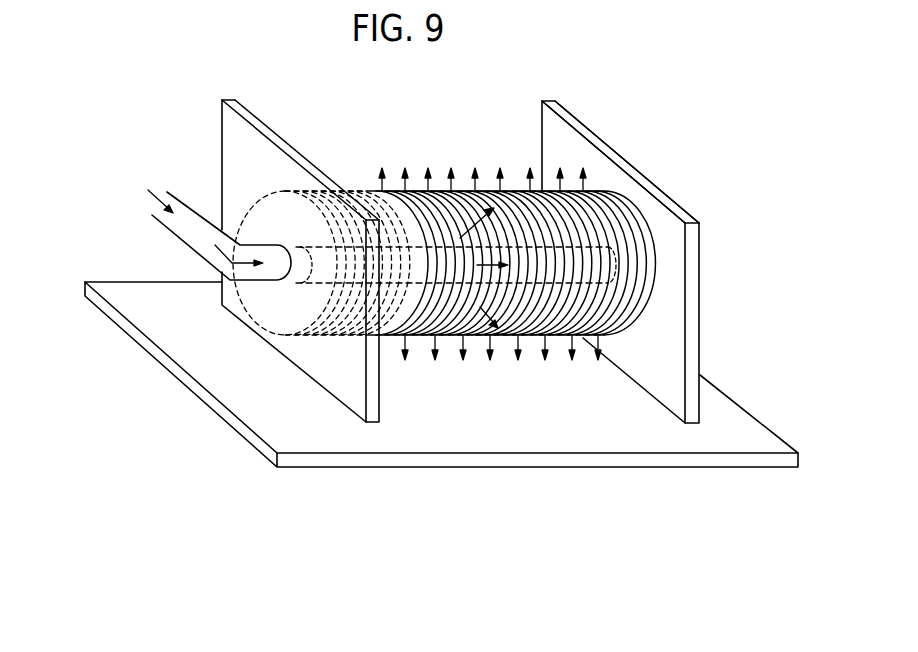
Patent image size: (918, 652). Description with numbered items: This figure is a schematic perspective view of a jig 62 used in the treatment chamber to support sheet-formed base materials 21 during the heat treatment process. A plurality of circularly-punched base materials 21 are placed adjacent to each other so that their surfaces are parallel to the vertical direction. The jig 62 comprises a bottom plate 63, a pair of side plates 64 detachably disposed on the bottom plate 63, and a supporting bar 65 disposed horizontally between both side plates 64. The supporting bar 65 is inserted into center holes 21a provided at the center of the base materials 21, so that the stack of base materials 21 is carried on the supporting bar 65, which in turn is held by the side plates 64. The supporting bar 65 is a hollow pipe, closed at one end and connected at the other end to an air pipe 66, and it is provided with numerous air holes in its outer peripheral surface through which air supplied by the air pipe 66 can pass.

The sheet-formed base materials 21 is at (418, 191).
The center holes 21a is at (312, 192).
The jig 62 is at (616, 147).
The bottom plate 63 is at (621, 443).
The side plates 64 is at (232, 130).
The supporting bar 65 is at (490, 191).
The air pipe 66 is at (188, 242).